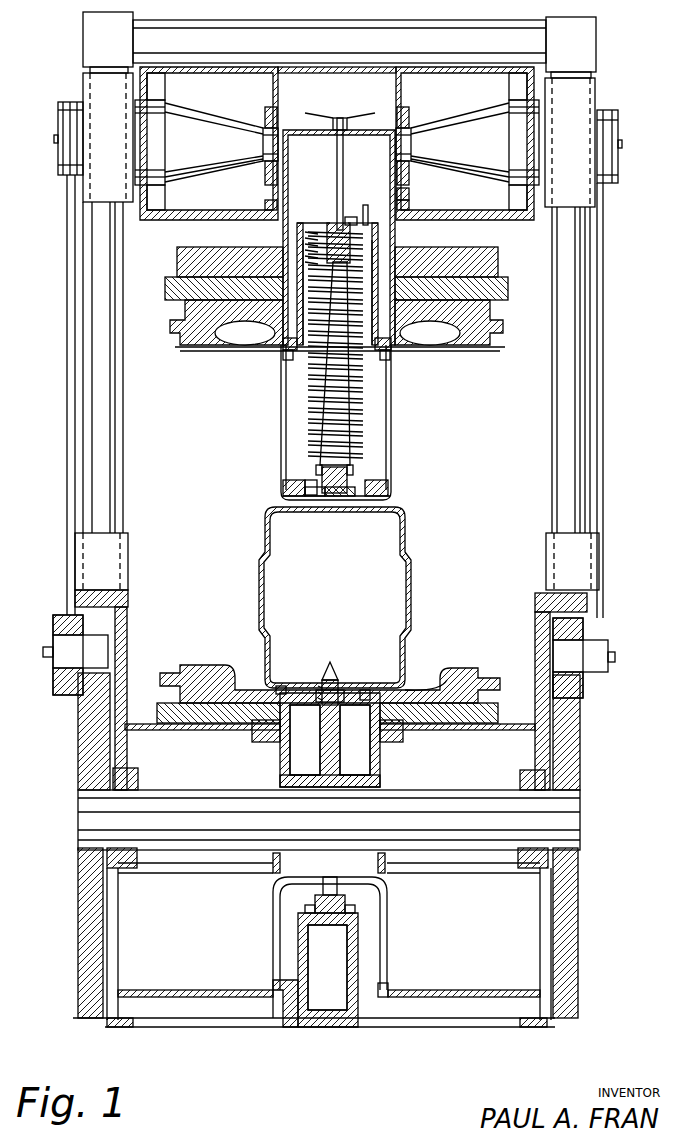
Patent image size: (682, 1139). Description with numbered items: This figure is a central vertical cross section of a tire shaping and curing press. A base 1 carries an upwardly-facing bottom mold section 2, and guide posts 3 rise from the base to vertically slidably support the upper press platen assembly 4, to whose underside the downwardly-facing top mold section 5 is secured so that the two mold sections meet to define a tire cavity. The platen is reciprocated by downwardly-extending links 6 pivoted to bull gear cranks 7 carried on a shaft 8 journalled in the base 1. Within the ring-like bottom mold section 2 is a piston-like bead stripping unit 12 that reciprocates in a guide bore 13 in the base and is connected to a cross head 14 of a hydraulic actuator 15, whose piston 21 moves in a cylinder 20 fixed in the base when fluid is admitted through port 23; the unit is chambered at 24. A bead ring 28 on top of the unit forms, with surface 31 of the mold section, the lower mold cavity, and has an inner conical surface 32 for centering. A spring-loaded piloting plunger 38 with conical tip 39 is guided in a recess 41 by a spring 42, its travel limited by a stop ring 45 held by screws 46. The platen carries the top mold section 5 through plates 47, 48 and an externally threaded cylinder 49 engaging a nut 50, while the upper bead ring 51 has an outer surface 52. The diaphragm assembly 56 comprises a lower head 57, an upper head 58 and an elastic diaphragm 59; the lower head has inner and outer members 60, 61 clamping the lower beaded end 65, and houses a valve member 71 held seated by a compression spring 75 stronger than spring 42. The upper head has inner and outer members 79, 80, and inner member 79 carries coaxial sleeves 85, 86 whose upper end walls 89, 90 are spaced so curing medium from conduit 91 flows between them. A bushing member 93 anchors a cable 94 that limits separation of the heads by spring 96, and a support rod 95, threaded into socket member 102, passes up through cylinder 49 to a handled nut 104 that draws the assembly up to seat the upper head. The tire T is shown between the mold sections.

The base 1 is at (547, 748).
The bottom mold section 2 is at (466, 668).
The guide posts 3 is at (85, 450).
The upper press platen assembly 4 is at (525, 135).
The top mold section 5 is at (496, 346).
The links 6 is at (72, 328).
The bull gear cranks 7 is at (82, 928).
The shaft 8 is at (562, 818).
The bead stripping unit 12 is at (381, 776).
The guide bore 13 is at (281, 760).
The cross head 14 is at (346, 905).
The hydraulic actuator 15 is at (362, 935).
The cylinder 20 is at (365, 975).
The piston 21 is at (348, 958).
The port 23 is at (276, 985).
The chamber 24 is at (362, 745).
The bead ring 28 is at (380, 690).
The surface 31 is at (416, 689).
The inner conical surface 32 is at (284, 686).
The piloting plunger 38 is at (329, 680).
The conical tip 39 is at (339, 678).
The recess 41 is at (338, 702).
The spring 42 is at (318, 702).
The stop ring 45 is at (318, 686).
The screws 46 is at (342, 690).
The plate 47 is at (507, 290).
The plate 48 is at (497, 262).
The externally threaded cylinder 49 is at (396, 238).
The nut 50 is at (404, 193).
The bead ring 51 is at (384, 346).
The outer surface 52 is at (281, 341).
The diaphragm assembly 56 is at (398, 455).
The lower head 57 is at (391, 493).
The upper head 58 is at (287, 363).
The diaphragm 59 is at (281, 420).
The inner member 60 is at (300, 487).
The outer member 61 is at (293, 498).
The lower beaded end 65 is at (283, 490).
The valve member 71 is at (338, 497).
The compression spring 75 is at (355, 480).
The inner member 79 is at (389, 360).
The outer member 80 is at (285, 355).
The sleeve 85 is at (298, 268).
The sleeve 86 is at (303, 283).
The upper end wall 89 is at (299, 230).
The upper end wall 90 is at (311, 225).
The conduit 91 is at (366, 220).
The bushing member 93 is at (323, 228).
The cable 94 is at (352, 432).
The support rod 95 is at (342, 166).
The spring 96 is at (365, 415).
The socket member 102 is at (351, 225).
The handled nut 104 is at (343, 116).
The tube T is at (409, 590).